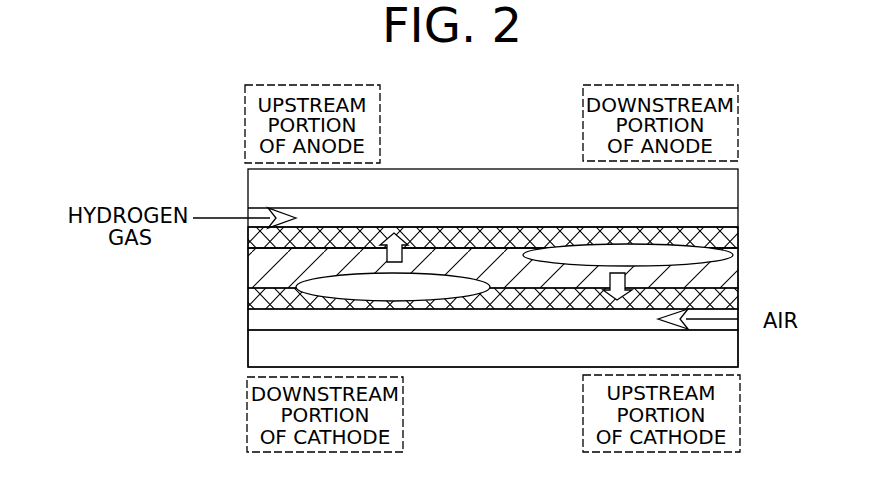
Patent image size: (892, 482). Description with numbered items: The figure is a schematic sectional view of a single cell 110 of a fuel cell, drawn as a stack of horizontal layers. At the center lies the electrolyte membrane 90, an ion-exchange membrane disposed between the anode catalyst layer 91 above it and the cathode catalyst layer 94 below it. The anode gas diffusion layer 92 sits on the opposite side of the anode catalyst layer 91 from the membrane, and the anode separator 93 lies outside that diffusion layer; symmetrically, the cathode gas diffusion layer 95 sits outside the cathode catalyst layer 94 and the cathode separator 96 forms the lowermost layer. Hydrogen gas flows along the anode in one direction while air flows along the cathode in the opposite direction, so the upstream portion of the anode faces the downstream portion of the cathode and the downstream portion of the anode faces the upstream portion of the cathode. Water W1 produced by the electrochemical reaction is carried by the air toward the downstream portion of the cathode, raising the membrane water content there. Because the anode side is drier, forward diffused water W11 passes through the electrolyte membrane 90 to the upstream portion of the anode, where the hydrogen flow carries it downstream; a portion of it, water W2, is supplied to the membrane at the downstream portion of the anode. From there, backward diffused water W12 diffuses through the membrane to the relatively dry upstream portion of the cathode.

The cell 110 is at (152, 395).
The anode separator 93 is at (247, 175).
The anode gas diffusion layer 92 is at (247, 227).
The anode catalyst layer 91 is at (247, 248).
The electrolyte membrane 90 is at (247, 275).
The cathode catalyst layer 94 is at (247, 308).
The cathode gas diffusion layer 95 is at (247, 328).
The cathode separator 96 is at (247, 365).
The water W1 is at (483, 227).
The forward diffused water W11 is at (400, 245).
The water W2 is at (700, 228).
The backward diffused water W12 is at (633, 281).